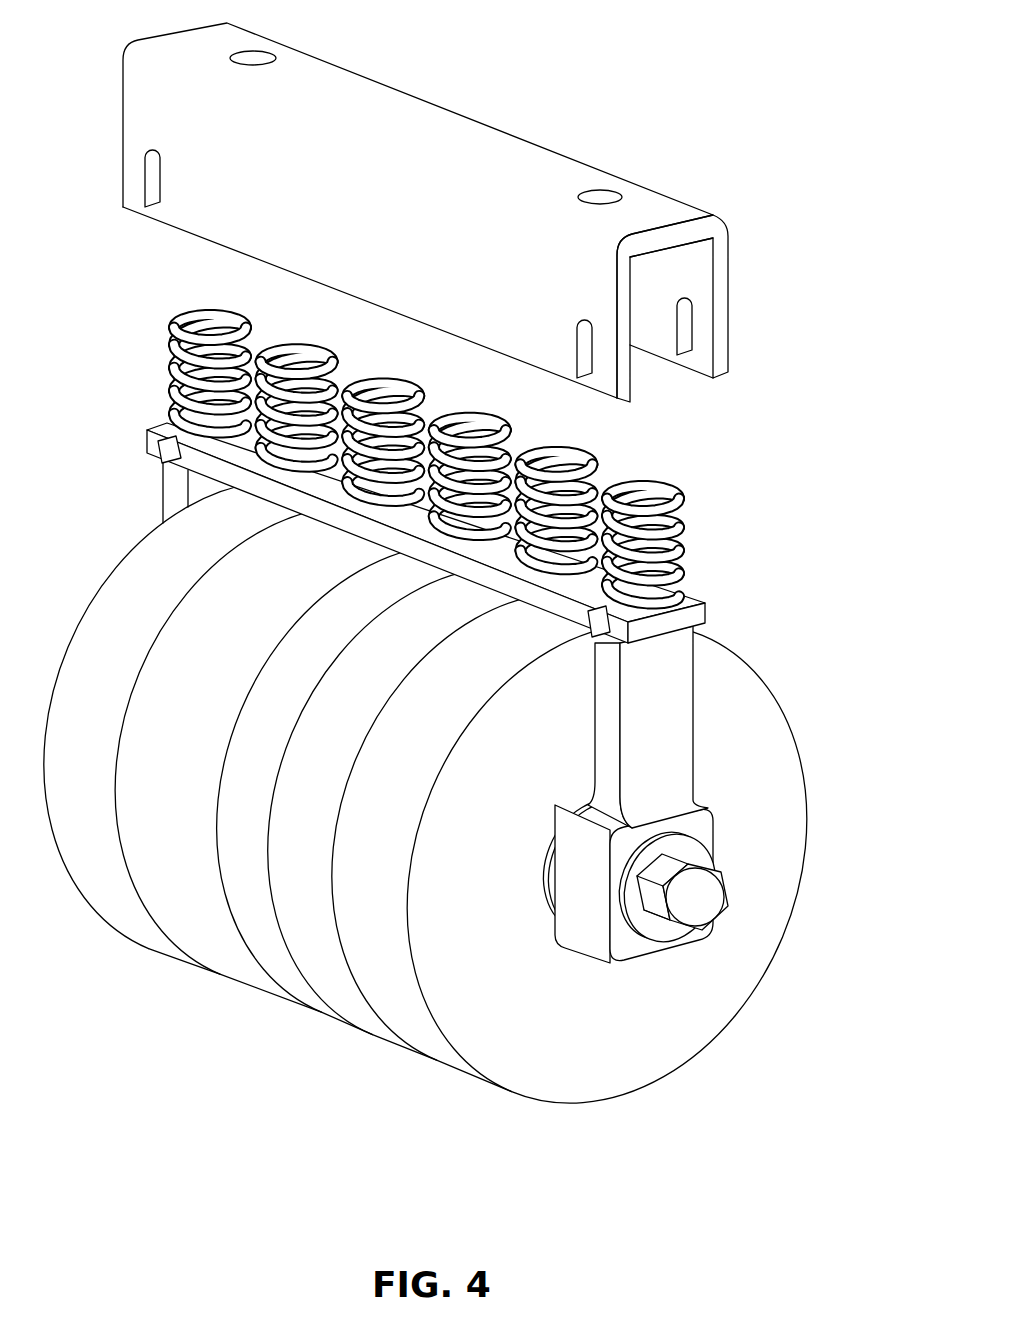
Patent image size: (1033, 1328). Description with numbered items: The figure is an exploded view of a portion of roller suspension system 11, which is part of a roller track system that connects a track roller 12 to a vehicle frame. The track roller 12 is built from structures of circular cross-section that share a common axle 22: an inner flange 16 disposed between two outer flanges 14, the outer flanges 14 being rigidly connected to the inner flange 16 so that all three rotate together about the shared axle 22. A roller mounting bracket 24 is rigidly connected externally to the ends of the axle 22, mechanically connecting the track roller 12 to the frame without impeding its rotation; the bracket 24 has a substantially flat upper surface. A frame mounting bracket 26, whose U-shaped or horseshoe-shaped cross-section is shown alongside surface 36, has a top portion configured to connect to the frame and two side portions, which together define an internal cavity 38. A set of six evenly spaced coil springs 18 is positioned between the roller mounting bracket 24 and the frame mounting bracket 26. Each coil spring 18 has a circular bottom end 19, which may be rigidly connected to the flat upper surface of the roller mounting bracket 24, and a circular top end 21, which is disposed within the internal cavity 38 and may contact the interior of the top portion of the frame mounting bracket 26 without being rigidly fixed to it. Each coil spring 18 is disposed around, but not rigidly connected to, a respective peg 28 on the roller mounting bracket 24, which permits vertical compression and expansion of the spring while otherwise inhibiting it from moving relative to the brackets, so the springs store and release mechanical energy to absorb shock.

The roller suspension system 11 is at (461, 594).
The track roller 12 is at (461, 814).
The outer flange 14 is at (186, 776).
The inner flange 16 is at (321, 813).
The coil spring 18 is at (695, 523).
The circular bottom end 19 is at (694, 523).
The circular top end 21 is at (638, 485).
The axle 22 is at (710, 911).
The roller mounting bracket 24 is at (671, 714).
The frame mounting bracket 26 is at (441, 212).
The peg 28 is at (205, 335).
The surface 36 is at (680, 232).
The internal cavity 38 is at (680, 286).